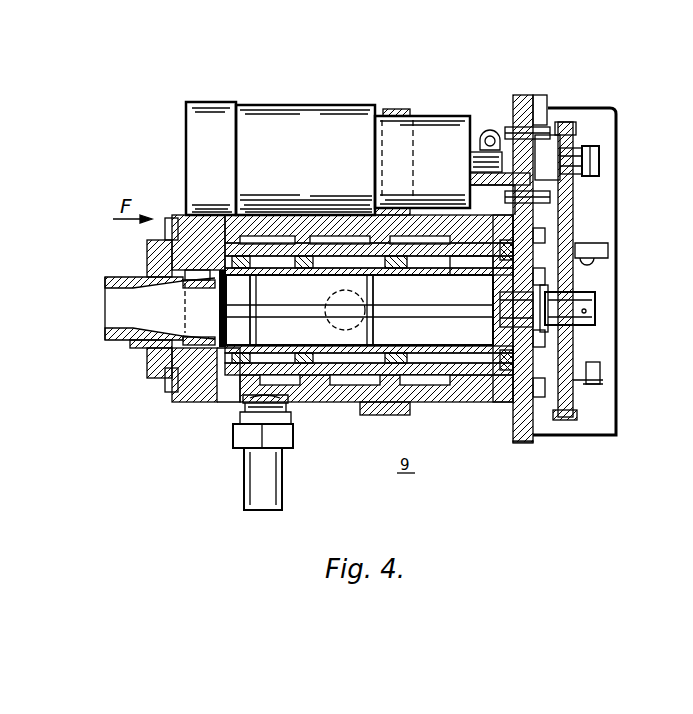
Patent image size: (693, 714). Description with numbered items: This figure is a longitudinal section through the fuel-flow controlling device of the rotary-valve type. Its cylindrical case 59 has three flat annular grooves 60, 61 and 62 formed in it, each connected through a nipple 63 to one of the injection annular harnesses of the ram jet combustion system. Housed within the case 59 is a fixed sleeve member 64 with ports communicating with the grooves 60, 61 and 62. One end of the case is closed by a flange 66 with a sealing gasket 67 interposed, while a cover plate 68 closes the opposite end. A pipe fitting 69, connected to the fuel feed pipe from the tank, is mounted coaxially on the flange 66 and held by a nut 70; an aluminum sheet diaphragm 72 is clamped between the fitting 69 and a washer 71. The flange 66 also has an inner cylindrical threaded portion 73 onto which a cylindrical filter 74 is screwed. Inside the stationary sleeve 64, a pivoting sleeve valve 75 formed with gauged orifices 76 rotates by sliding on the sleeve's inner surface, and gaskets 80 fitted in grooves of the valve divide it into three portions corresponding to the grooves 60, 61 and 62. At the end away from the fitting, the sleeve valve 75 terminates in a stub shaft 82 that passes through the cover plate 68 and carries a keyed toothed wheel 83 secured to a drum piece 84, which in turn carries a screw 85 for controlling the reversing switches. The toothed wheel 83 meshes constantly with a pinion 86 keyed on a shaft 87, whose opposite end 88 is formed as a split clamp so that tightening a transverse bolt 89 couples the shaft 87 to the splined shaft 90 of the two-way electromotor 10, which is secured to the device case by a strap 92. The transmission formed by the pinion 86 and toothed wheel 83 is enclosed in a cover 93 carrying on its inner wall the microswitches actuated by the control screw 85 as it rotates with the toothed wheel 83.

The two-way electromotor 10 is at (331, 120).
The strap 92 is at (388, 110).
The splined shaft 90 is at (476, 152).
The transverse bolt 89 is at (497, 136).
The split clamp end 88 is at (499, 182).
The flange 66 is at (185, 402).
The sealing gasket 67 is at (215, 402).
The pipe fitting 69 is at (142, 272).
The nut 70 is at (151, 378).
The aluminum sheet diaphragm 72 is at (210, 300).
The washer 71 is at (230, 336).
The flat annular groove 60 is at (272, 240).
The flat annular groove 61 is at (339, 243).
The flat annular groove 62 is at (429, 243).
The inner cylindrical threaded portion 73 is at (244, 283).
The cylindrical filter 74 is at (402, 270).
The pivoting sleeve valve 75 is at (457, 270).
The gauged orifices 76 is at (346, 375).
The fixed sleeve member 64 is at (436, 385).
The cylindrical case 59 is at (471, 402).
The cover plate 68 is at (525, 442).
The gaskets 80 is at (291, 390).
The nipple 63 is at (282, 470).
The cover 93 is at (616, 110).
The toothed wheel 83 is at (573, 222).
The pinion 86 is at (567, 122).
The shaft 87 is at (599, 158).
The drum piece 84 is at (608, 248).
The stub shaft 82 is at (580, 300).
The screw 85 is at (604, 384).